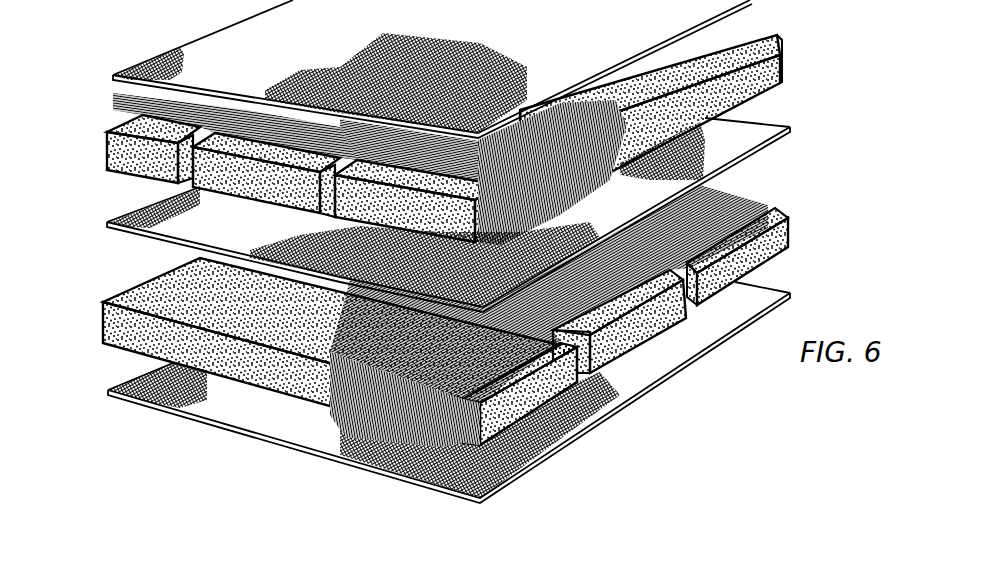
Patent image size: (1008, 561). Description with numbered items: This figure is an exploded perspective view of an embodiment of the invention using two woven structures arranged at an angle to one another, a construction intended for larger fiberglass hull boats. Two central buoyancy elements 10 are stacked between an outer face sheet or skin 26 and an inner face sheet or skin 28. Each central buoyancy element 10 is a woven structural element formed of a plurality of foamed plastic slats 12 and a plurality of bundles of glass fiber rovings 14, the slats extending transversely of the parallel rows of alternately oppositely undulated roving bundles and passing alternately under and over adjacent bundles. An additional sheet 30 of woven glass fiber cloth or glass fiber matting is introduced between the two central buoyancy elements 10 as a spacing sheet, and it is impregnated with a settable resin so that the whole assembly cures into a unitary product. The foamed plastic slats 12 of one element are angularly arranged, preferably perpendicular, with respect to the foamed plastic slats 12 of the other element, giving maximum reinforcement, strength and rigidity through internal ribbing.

The central buoyancy element 10 is at (460, 276).
The foamed plastic slats 12 is at (220, 180).
The bundles of glass fiber rovings 14 is at (595, 0).
The outer face sheet or skin 26 is at (180, 58).
The inner face sheet or skin 28 is at (190, 403).
The spacing sheet 30 is at (128, 227).